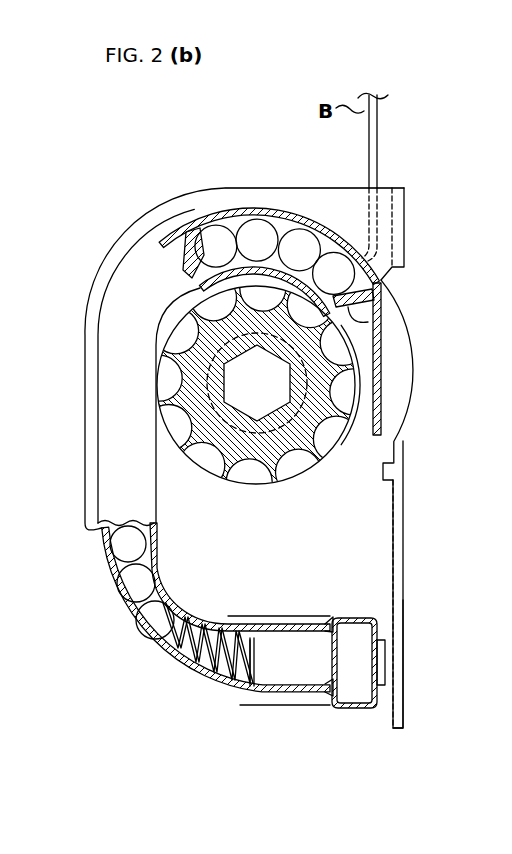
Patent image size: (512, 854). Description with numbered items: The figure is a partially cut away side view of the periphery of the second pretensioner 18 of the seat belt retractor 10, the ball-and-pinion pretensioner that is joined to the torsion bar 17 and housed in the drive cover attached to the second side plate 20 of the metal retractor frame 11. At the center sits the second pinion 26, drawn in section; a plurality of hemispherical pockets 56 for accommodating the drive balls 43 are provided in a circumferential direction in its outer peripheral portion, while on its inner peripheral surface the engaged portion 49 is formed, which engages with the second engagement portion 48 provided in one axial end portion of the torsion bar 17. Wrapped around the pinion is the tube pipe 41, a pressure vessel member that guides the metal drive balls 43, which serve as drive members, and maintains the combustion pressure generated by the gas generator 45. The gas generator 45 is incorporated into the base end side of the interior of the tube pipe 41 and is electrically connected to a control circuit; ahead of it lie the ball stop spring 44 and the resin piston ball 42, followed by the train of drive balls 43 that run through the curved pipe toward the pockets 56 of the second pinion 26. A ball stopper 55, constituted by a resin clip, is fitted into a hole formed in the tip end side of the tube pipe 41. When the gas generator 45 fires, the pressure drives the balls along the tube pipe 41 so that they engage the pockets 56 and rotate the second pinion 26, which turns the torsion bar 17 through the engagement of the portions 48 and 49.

The seat belt retractor 10 is at (436, 131).
The retractor frame 11 is at (405, 652).
The torsion bar 17 is at (262, 402).
The second pretensioner 18 is at (216, 209).
The second side plate 20 is at (380, 542).
The second pinion 26 is at (348, 432).
The tube pipe 41 is at (180, 693).
The resin piston ball 42 is at (142, 623).
The drive balls 43 is at (128, 583).
The ball stop spring 44 is at (228, 690).
The gas generator 45 is at (300, 682).
The second engagement portion 48 is at (232, 460).
The engaged portion 49 is at (282, 404).
The ball stopper 55 is at (380, 316).
The hemispherical pockets 56 is at (346, 407).